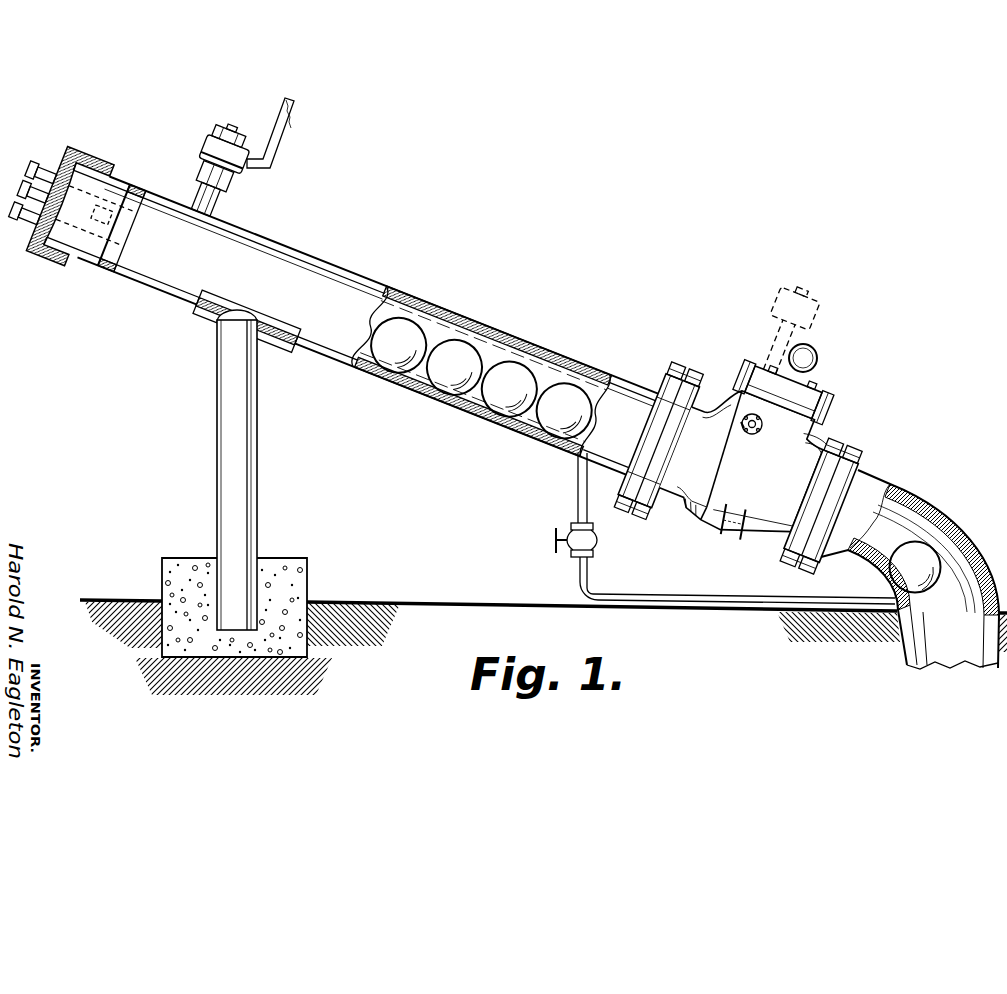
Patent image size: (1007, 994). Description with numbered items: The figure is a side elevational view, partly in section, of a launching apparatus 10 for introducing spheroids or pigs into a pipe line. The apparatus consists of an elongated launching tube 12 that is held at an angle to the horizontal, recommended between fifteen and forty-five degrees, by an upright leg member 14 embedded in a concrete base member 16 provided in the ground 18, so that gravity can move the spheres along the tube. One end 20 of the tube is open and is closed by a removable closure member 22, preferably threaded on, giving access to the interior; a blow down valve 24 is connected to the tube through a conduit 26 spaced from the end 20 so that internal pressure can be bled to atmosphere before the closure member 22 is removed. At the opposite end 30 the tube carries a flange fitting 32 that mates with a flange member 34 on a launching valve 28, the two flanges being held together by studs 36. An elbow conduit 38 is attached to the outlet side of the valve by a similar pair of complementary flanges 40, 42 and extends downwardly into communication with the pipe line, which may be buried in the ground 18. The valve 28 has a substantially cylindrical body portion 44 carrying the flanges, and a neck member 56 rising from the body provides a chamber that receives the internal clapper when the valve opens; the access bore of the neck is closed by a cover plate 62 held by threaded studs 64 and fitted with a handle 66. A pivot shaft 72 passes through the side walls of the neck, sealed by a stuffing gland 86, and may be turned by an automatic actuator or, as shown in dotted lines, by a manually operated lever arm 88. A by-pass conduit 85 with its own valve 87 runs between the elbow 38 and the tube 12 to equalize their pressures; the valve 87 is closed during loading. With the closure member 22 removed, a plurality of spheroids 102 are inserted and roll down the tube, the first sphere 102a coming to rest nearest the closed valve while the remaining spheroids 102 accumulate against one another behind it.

The launching apparatus 10 is at (346, 292).
The launching tube 12 is at (518, 338).
The upright leg member 14 is at (258, 483).
The concrete base member 16 is at (301, 573).
The ground 18 is at (485, 604).
The end of tube 20 is at (98, 171).
The closure member 22 is at (62, 170).
The blow down valve 24 is at (205, 155).
The conduit 26 is at (221, 205).
The launching valve 28 is at (729, 397).
The opposite end of tube 30 is at (641, 381).
The flange fitting 32 is at (677, 373).
The flange member 34 is at (646, 507).
The studs 36 is at (628, 484).
The elbow conduit 38 is at (964, 548).
The flange 40 is at (861, 448).
The flange 42 is at (843, 441).
The body portion 44 is at (724, 530).
The neck member 56 is at (824, 433).
The cover plate 62 is at (816, 396).
The threaded studs 64 is at (749, 367).
The handle 66 is at (814, 356).
The pivot shaft 72 is at (763, 428).
The by-pass conduit 85 is at (606, 596).
The stuffing gland 86 is at (740, 426).
The valve 87 is at (596, 541).
The lever arm 88 is at (806, 306).
The spheroids 102 is at (568, 385).
The first sphere 102a is at (927, 551).